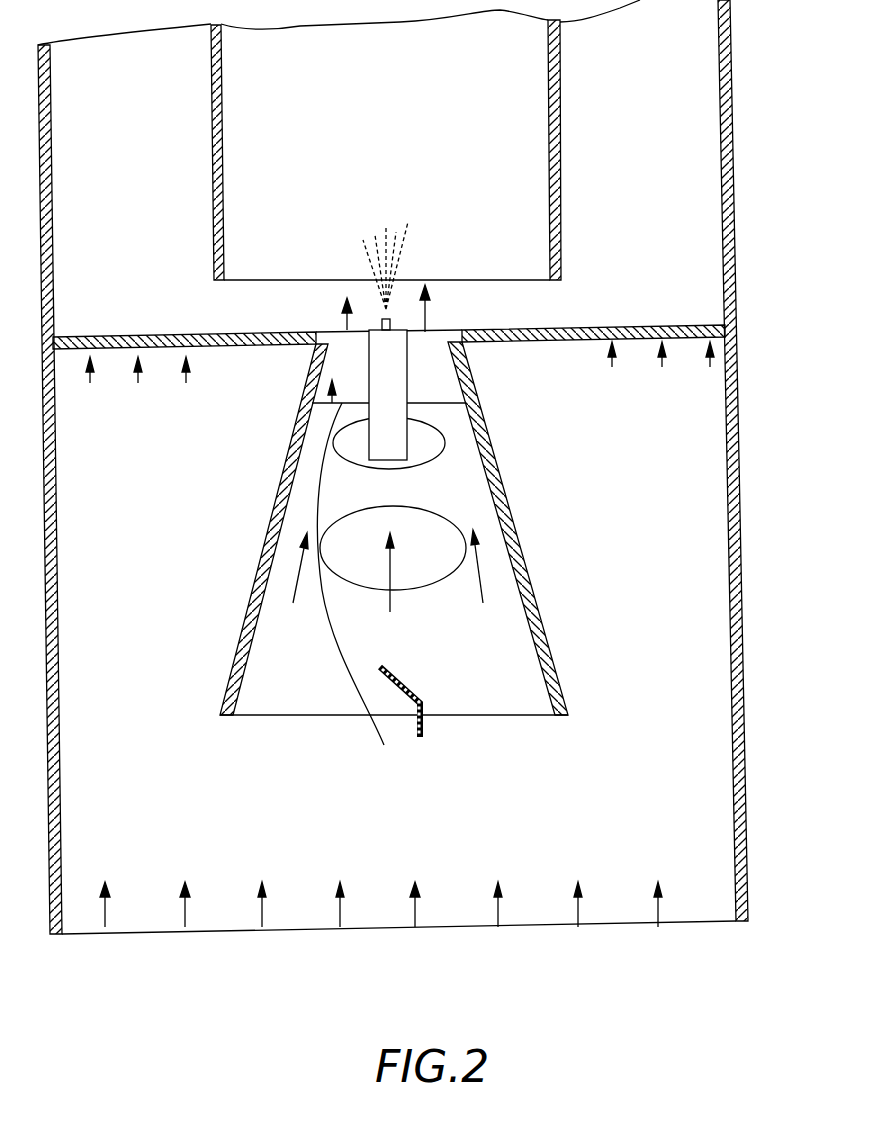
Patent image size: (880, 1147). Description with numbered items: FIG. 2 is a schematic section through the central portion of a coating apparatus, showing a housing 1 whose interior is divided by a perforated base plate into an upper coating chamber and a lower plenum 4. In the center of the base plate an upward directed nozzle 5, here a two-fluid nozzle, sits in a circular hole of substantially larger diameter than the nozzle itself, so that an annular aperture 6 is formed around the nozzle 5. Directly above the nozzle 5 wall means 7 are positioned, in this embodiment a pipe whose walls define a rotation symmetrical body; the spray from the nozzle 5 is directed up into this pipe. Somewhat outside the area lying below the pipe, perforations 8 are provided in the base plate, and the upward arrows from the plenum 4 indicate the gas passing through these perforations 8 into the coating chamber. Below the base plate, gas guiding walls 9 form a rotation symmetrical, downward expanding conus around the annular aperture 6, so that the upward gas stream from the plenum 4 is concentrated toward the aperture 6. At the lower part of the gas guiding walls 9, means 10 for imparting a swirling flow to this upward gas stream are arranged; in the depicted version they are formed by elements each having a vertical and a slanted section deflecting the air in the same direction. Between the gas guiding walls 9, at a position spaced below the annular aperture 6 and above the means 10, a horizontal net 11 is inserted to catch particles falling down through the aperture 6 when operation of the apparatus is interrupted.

The housing 1 is at (727, 33).
The plenum 4 is at (427, 828).
The nozzle 5 is at (388, 322).
The annular aperture 6 is at (362, 332).
The wall means 7 is at (561, 137).
The perforations 8 is at (686, 325).
The gas guiding walls 9 is at (505, 505).
The means for imparting a swirling flow 10 is at (408, 690).
The horizontal net 11 is at (448, 401).